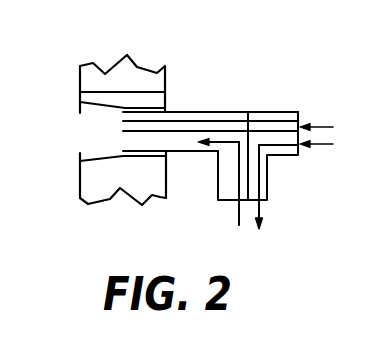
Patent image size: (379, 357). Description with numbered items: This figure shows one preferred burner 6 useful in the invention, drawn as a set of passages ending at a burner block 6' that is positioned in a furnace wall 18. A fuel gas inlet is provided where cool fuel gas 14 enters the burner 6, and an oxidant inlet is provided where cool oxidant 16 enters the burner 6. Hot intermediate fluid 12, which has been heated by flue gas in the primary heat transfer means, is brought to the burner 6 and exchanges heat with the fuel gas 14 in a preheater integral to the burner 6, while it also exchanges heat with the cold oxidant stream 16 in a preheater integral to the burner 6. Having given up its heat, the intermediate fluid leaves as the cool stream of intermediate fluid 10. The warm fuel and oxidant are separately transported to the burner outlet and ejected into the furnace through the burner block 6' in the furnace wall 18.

The burner 6 is at (234, 152).
The burner block 6' is at (100, 113).
The cool stream of intermediate fluid 10 is at (261, 212).
The hot intermediate fluid 12 is at (311, 145).
The cool fuel gas 14 is at (311, 127).
The cool oxidant 16 is at (237, 212).
The furnace wall 18 is at (165, 83).